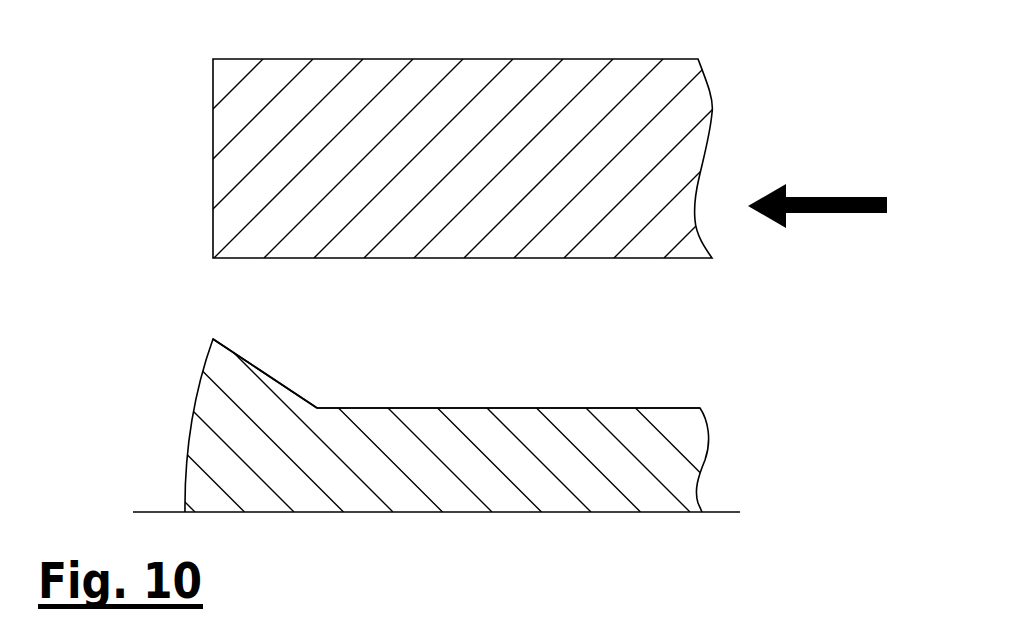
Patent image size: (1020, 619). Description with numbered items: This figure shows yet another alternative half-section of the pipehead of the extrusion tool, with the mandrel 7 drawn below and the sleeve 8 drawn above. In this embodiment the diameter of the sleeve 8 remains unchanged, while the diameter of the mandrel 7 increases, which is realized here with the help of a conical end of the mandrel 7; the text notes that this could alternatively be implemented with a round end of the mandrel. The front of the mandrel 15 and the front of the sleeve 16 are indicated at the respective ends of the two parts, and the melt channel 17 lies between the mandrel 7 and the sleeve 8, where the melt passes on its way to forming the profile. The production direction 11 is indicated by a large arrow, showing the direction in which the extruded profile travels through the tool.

The mandrel 7 is at (625, 470).
The sleeve 8 is at (552, 120).
The production direction 11 is at (813, 198).
The front of mandrel 15 is at (165, 398).
The front of sleeve 16 is at (180, 175).
The melt channel 17 is at (560, 333).